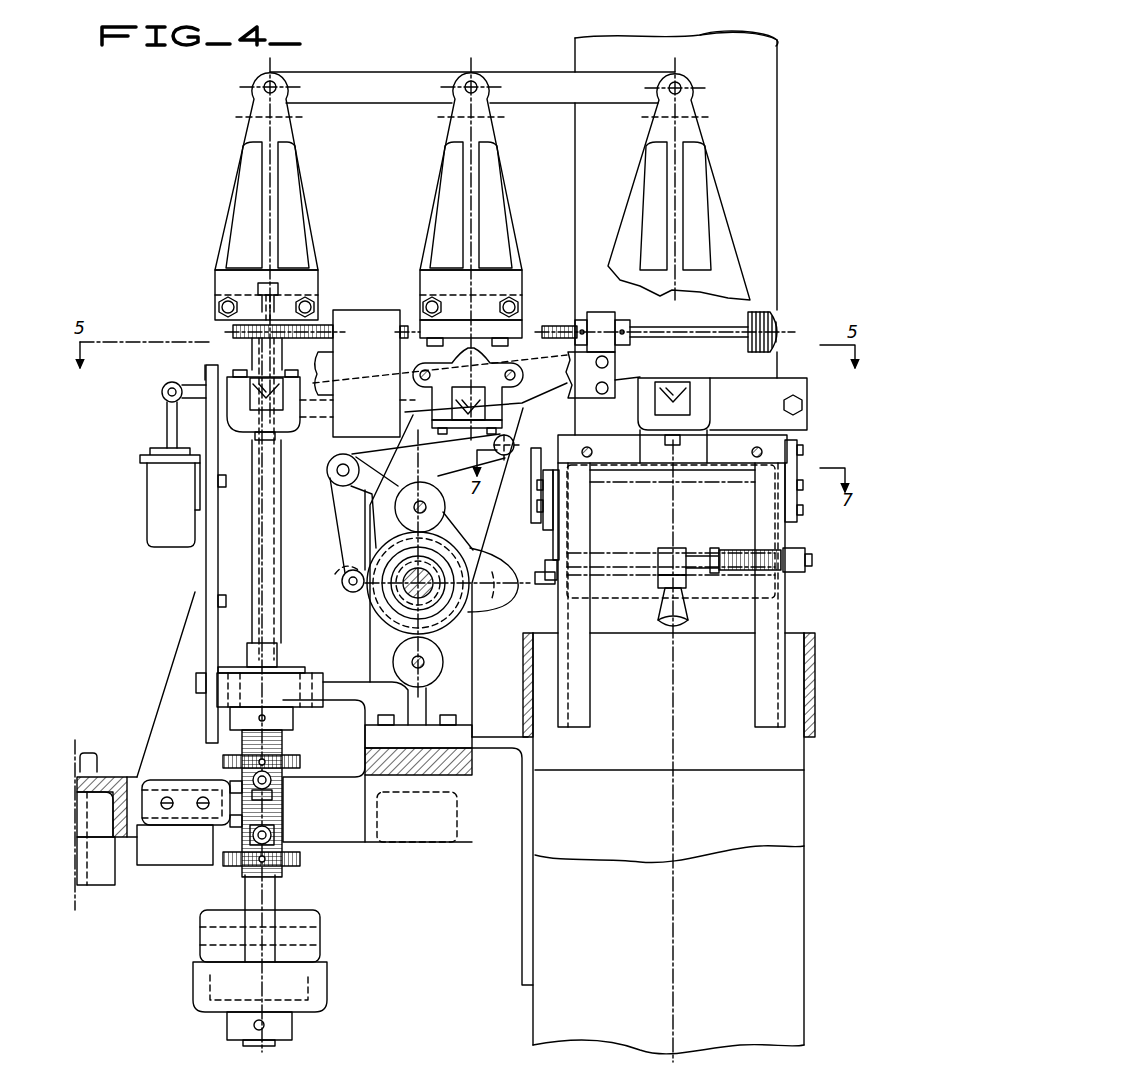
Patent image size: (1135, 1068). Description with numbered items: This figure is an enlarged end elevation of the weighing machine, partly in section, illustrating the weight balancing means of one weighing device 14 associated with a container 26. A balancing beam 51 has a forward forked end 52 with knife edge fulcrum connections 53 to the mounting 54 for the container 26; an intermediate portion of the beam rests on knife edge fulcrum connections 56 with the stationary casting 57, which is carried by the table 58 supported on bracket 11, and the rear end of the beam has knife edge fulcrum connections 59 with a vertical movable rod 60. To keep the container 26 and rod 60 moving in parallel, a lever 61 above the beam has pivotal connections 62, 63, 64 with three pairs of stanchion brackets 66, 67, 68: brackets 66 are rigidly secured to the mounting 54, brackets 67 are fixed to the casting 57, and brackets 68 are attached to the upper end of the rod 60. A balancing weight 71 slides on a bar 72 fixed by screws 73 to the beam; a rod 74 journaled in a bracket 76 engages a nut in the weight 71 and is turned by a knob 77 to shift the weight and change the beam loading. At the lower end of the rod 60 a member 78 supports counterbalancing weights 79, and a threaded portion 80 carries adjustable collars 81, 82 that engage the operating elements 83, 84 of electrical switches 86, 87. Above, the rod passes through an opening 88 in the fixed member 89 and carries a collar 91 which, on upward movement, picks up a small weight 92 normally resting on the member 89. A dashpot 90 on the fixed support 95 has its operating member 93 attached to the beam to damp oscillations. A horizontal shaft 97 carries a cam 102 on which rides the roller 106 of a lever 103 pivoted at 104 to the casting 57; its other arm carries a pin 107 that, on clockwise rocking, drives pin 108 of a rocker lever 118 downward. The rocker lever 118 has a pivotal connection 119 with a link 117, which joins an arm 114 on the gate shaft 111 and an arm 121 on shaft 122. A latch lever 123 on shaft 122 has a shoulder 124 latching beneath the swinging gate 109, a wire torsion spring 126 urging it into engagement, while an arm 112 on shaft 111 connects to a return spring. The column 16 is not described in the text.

The bracket 11 is at (97, 878).
The weighing device 14 is at (197, 306).
The column 16 is at (790, 918).
The container 26 is at (778, 90).
The balancing beam 51 is at (608, 403).
The forked end 52 is at (705, 405).
The knife edge fulcrum connections 53 is at (690, 392).
The mounting 54 is at (797, 393).
The knife edge fulcrum connections 56 is at (466, 400).
The stationary casting 57 is at (472, 670).
The table 58 is at (397, 845).
The knife edge fulcrum connections 59 is at (292, 419).
The vertical movable rod 60 is at (280, 573).
The lever 61 is at (413, 62).
The pivotal connection 62 is at (683, 91).
The pivotal connection 63 is at (478, 81).
The pivotal connection 64 is at (262, 86).
The stanchion brackets 66 is at (716, 206).
The stanchion brackets 67 is at (500, 206).
The stanchion brackets 68 is at (298, 206).
The balancing weight 71 is at (355, 312).
The bar 72 is at (316, 356).
The screws 73 is at (431, 377).
The rod 74 is at (647, 331).
The bracket 76 is at (600, 318).
The knob 77 is at (770, 323).
The member 78 is at (327, 982).
The counterbalancing weights 79 is at (318, 940).
The threaded portion 80 is at (282, 808).
The adjustable collar 81 is at (300, 762).
The adjustable collar 82 is at (300, 860).
The operating element 83 is at (282, 786).
The operating element 84 is at (284, 838).
The electrical switch 86 is at (190, 790).
The electrical switch 87 is at (165, 790).
The opening 88 is at (300, 706).
The fixed member 89 is at (342, 682).
The dashpot 90 is at (147, 510).
The adjustable collar 91 is at (293, 728).
The small weight 92 is at (288, 667).
The operating member 93 is at (167, 428).
The fixed support 95 is at (205, 573).
The horizontal shaft 97 is at (400, 588).
The cam 102 is at (505, 600).
The lever 103 is at (338, 522).
The pivot 104 is at (330, 478).
The roller 106 is at (342, 583).
The pin 107 is at (519, 440).
The pin 108 is at (521, 460).
The swinging gate 109 is at (605, 595).
The shaft 111 is at (630, 476).
The arm 112 is at (800, 500).
The arm 114 is at (556, 502).
The link 117 is at (556, 518).
The rocker lever 118 is at (538, 497).
The pivotal connection 119 is at (540, 514).
The arm 121 is at (548, 533).
The shaft 122 is at (806, 563).
The latch lever 123 is at (676, 556).
The shoulder 124 is at (680, 600).
The wire torsion spring 126 is at (745, 554).